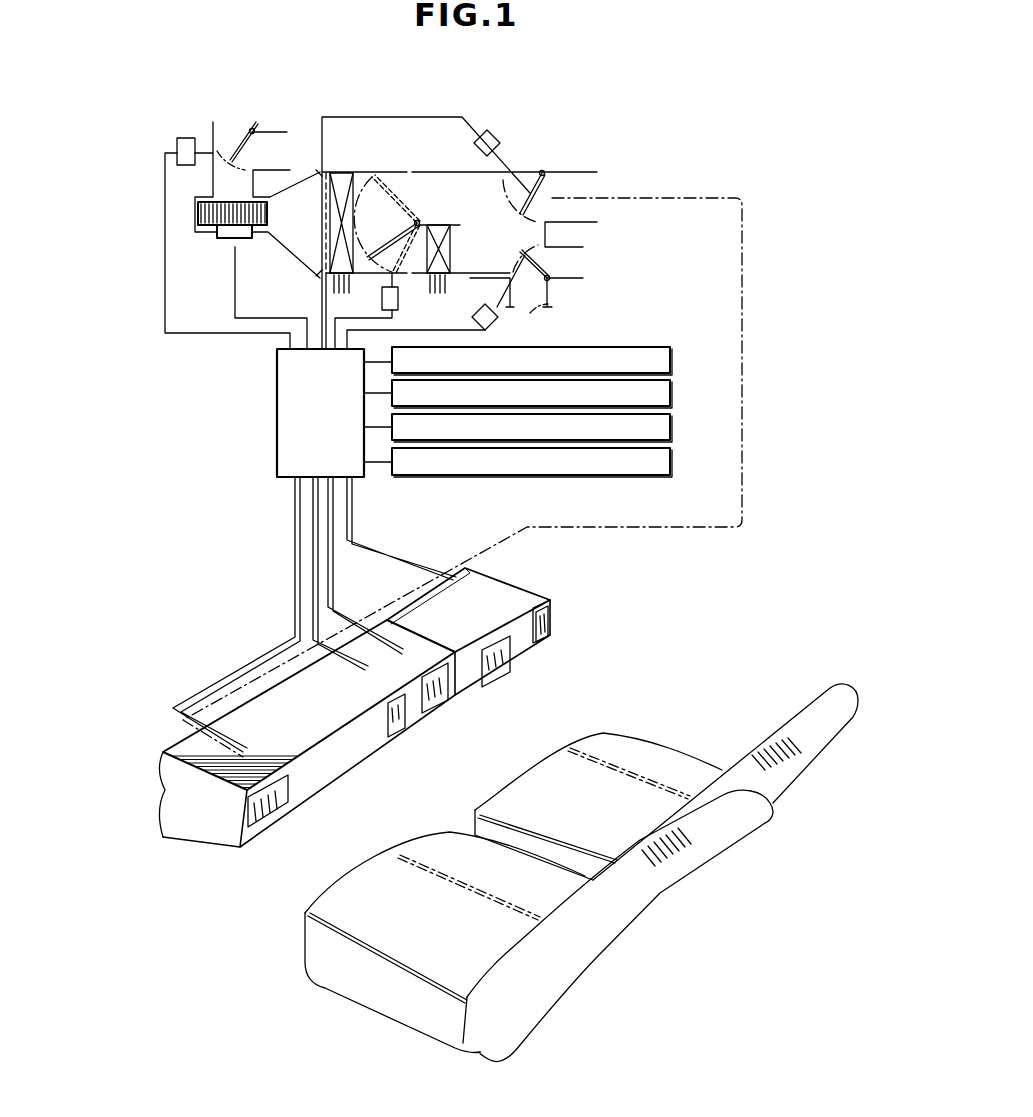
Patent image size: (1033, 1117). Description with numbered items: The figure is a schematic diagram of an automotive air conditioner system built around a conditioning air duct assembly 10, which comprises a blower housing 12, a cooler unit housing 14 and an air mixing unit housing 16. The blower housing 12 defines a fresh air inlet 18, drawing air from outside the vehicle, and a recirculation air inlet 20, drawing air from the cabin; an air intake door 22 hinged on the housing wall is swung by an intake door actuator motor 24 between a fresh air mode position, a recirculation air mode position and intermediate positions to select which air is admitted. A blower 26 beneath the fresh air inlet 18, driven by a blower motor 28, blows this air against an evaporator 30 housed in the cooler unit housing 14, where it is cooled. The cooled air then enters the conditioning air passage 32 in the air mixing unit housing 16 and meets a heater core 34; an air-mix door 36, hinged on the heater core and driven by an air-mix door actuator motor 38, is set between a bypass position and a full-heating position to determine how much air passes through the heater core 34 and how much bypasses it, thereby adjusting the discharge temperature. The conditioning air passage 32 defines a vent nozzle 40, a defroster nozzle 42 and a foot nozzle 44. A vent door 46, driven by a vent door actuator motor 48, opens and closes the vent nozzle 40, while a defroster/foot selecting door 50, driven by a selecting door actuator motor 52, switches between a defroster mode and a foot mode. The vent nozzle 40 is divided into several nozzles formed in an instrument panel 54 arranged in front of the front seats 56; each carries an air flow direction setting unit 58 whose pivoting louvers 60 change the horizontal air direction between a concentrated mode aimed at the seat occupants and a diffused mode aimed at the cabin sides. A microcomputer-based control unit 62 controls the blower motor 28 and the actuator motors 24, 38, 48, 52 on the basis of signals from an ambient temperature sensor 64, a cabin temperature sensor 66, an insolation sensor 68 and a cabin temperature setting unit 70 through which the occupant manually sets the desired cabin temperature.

The conditioning air duct assembly 10 is at (532, 163).
The blower housing 12 is at (213, 185).
The cooler unit housing 14 is at (378, 172).
The air mixing unit housing 16 is at (430, 170).
The conditioning air passage 32 is at (430, 170).
The fresh air inlet 18 is at (242, 120).
The recirculation air inlet 20 is at (290, 180).
The air intake door 22 is at (235, 170).
The intake door actuator motor 24 is at (178, 140).
The blower 26 is at (200, 222).
The blower motor 28 is at (250, 240).
The evaporator 30 is at (343, 177).
The heater core 34 is at (450, 248).
The air-mix door 36 is at (392, 237).
The air-mix door actuator motor 38 is at (398, 298).
The vent nozzle 40 is at (590, 187).
The defroster nozzle 42 is at (580, 267).
The foot nozzle 44 is at (532, 303).
The vent door 46 is at (550, 173).
The vent door actuator motor 48 is at (487, 135).
The defroster/foot selecting door 50 is at (550, 270).
The selecting door actuator motor 52 is at (498, 322).
The instrument panel 54 is at (522, 580).
The front seats 56 is at (648, 752).
The air flow direction setting unit 58 is at (555, 622).
The louvers 60 is at (272, 792).
The control unit 62 is at (277, 368).
The ambient temperature sensor 64 is at (672, 357).
The cabin temperature sensor 66 is at (672, 391).
The insolation sensor 68 is at (672, 425).
The cabin temperature setting unit 70 is at (672, 459).